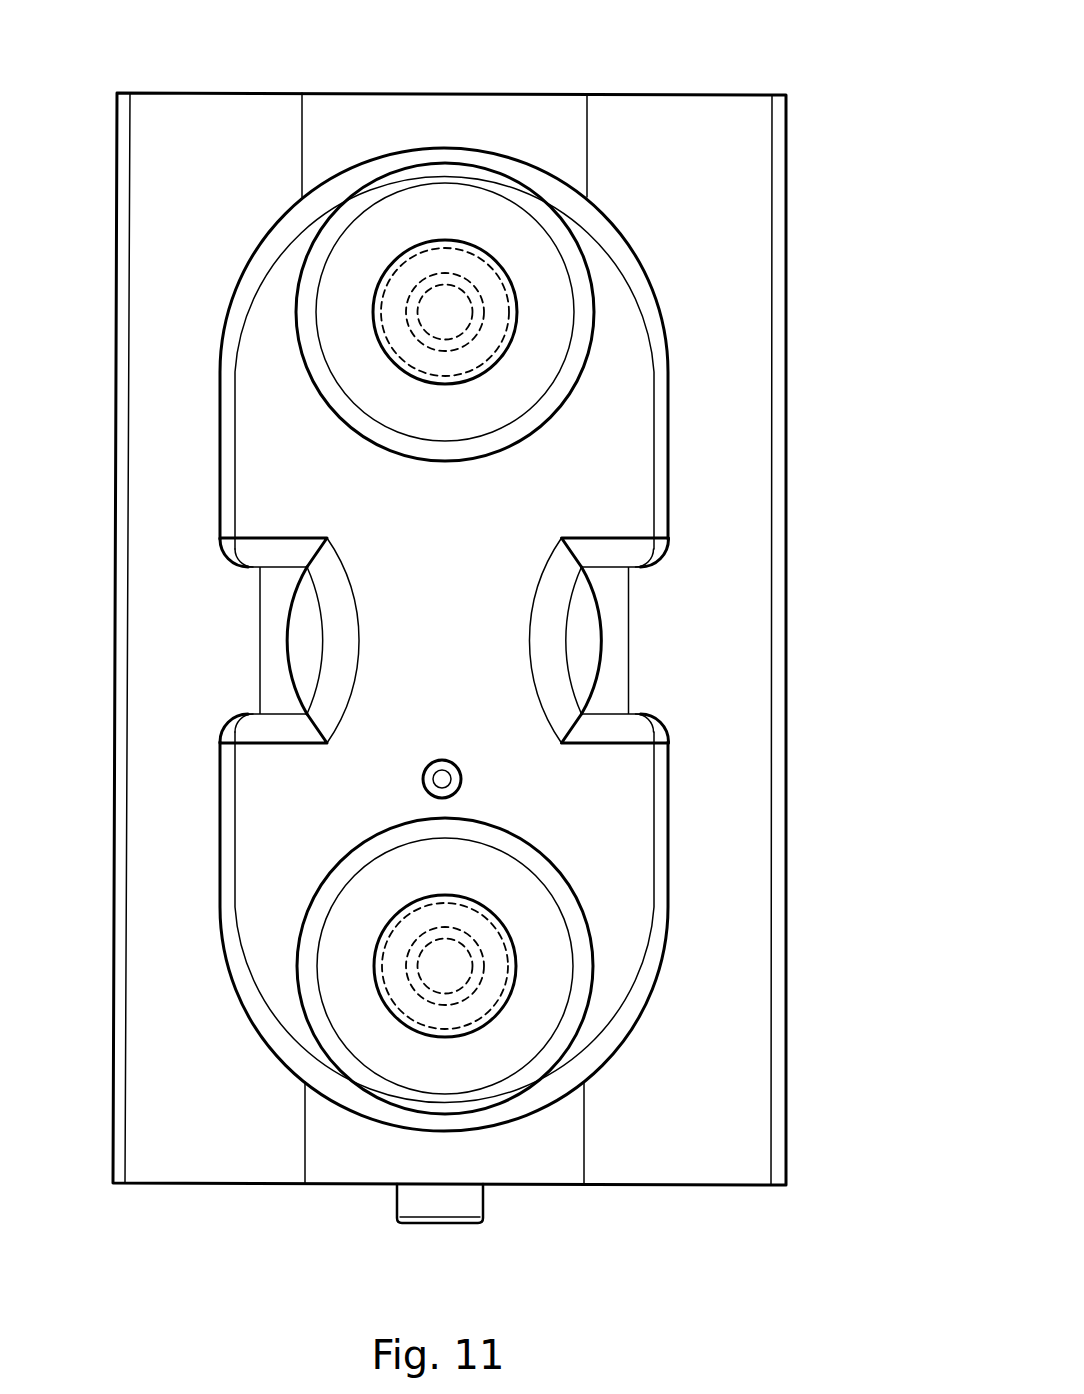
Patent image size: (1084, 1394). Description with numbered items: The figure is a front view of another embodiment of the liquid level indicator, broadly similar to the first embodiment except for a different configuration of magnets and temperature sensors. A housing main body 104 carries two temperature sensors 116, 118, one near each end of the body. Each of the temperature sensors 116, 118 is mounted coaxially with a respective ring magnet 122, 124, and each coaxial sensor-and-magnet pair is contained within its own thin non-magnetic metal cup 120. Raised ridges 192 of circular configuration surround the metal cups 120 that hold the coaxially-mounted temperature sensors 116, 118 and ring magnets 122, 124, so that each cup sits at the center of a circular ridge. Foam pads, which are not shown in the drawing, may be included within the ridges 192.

The housing main body 104 is at (252, 1172).
The temperature sensor 116 is at (446, 965).
The temperature sensor 118 is at (452, 312).
The thin non-magnetic metal cup 120 is at (513, 283).
The ring magnet 122 is at (443, 257).
The ring magnet 124 is at (460, 1018).
The raised ridge 192 is at (563, 405).